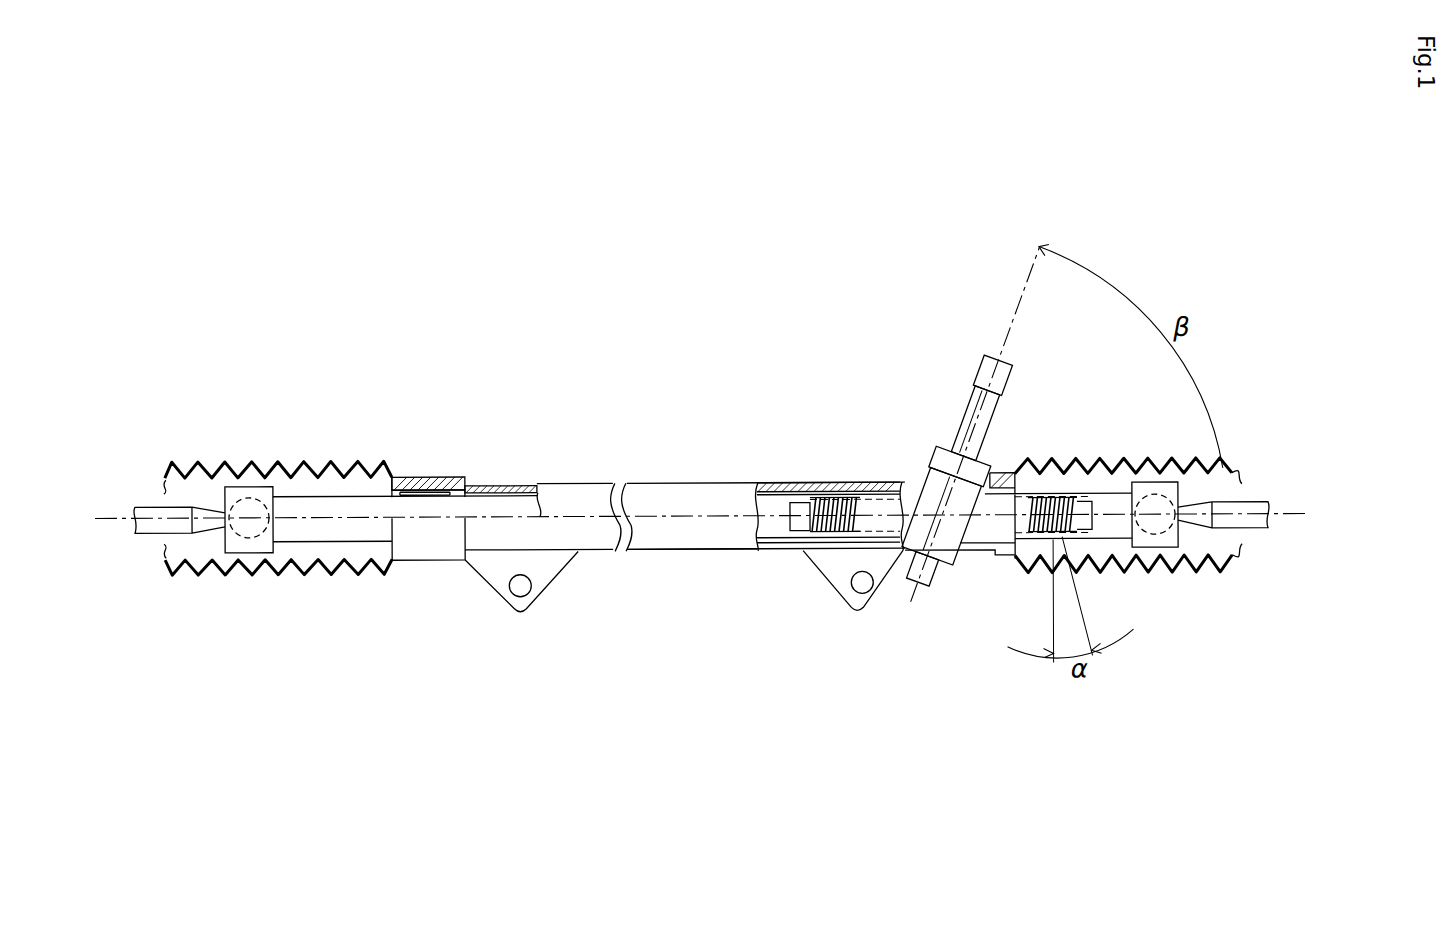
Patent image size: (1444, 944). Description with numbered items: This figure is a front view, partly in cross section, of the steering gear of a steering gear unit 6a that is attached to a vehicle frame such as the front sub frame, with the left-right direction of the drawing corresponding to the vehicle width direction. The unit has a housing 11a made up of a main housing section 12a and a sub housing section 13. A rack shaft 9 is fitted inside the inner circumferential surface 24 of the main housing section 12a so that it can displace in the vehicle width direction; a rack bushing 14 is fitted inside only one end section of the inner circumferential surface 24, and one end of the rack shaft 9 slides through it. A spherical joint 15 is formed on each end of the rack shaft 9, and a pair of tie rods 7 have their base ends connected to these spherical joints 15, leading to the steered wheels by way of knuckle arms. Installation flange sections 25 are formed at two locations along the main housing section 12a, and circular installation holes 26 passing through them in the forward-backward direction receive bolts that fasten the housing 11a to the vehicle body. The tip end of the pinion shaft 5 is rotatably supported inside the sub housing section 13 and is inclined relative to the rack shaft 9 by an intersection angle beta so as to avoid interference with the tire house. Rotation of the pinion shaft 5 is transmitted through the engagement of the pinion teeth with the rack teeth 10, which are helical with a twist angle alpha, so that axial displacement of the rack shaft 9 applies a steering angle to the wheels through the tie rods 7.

The pinion shaft 5 is at (977, 410).
The steering gear unit 6a is at (595, 401).
The tie rods 7 is at (150, 510).
The rack shaft 9 is at (773, 505).
The rack teeth 10 is at (1061, 500).
The housing 11a is at (666, 476).
The main housing section 12a is at (678, 538).
The sub housing section 13 is at (941, 553).
The rack bushing 14 is at (415, 478).
The spherical joint 15 is at (240, 490).
The inner circumferential surface 24 is at (828, 490).
The installation flange sections 25 is at (482, 563).
The installation holes 26 is at (520, 597).